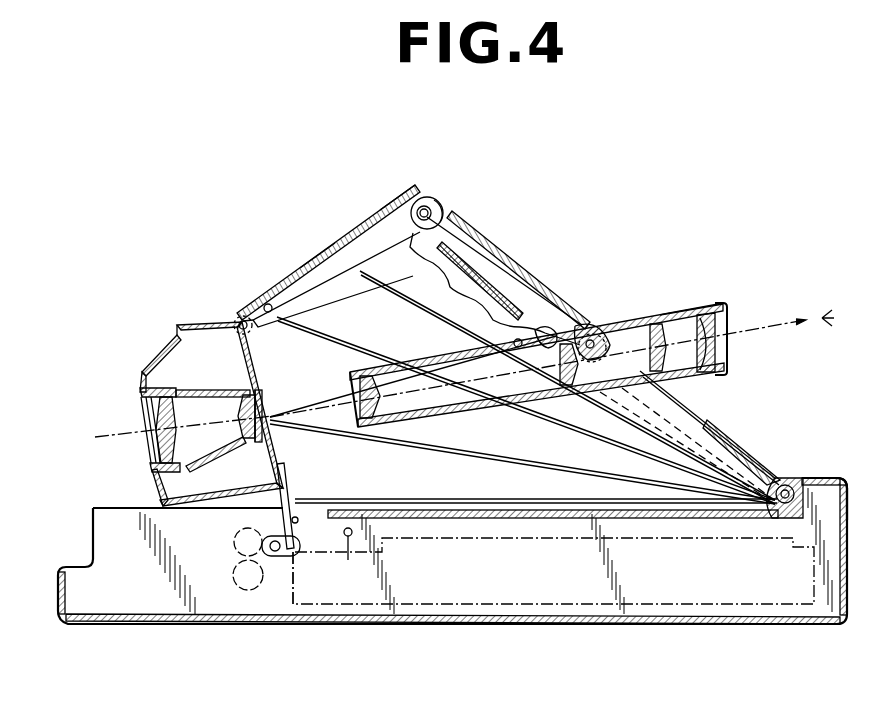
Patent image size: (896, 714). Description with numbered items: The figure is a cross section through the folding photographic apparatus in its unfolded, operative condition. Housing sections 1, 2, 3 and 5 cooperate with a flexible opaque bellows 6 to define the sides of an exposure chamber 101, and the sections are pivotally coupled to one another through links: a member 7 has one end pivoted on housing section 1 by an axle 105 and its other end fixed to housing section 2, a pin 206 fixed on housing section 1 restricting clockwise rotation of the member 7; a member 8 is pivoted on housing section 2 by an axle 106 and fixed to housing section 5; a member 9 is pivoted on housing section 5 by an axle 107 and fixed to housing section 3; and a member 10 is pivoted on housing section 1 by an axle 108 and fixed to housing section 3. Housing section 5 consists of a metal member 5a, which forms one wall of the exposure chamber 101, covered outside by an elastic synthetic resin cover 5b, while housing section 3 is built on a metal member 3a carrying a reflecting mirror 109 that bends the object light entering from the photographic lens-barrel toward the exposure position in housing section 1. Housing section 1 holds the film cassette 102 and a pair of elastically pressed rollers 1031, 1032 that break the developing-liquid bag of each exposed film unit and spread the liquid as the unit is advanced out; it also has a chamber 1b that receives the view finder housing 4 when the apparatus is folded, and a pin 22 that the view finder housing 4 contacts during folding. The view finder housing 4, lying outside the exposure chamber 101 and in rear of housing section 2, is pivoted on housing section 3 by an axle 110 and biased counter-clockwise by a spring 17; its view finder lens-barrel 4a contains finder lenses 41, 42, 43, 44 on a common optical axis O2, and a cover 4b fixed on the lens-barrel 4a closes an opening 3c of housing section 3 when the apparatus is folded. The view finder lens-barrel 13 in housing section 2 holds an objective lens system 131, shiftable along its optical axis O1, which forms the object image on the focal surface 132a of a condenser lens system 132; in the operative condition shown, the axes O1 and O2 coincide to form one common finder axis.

The housing section 1 is at (781, 616).
The chamber 1b is at (712, 538).
The housing section 2 is at (162, 352).
The housing section 3 is at (526, 272).
The metal member 3a is at (556, 296).
The opening 3c is at (698, 414).
The view finder housing 4 is at (486, 388).
The view finder lens-barrel 4a is at (690, 298).
The cover 4b is at (727, 306).
The finder lens 41 is at (368, 426).
The finder lens 42 is at (568, 386).
The finder lens 43 is at (654, 324).
The finder lens 44 is at (720, 348).
The housing section 5 is at (362, 240).
The metal member 5a is at (402, 216).
The elastic cover 5b is at (328, 248).
The flexible opaque bellows 6 is at (345, 300).
The member 7 is at (272, 501).
The member 8 is at (265, 304).
The member 9 is at (441, 202).
The member 10 is at (818, 500).
The view finder lens-barrel 13 is at (145, 385).
The objective lens system 131 is at (162, 448).
The condenser lens system 132 is at (262, 412).
The focal surface 132a is at (252, 395).
The spring 17 is at (552, 328).
The pin 22 is at (347, 559).
The exposure chamber 101 is at (540, 231).
The film cassette 102 is at (428, 592).
The roller 1031 is at (246, 590).
The roller 1032 is at (236, 550).
The axle 105 is at (276, 552).
The axle 106 is at (240, 319).
The axle 107 is at (424, 197).
The axle 108 is at (791, 482).
The reflecting mirror 109 is at (474, 254).
The axle 110 is at (598, 333).
The pin 206 is at (298, 562).
The optical axis O1 is at (180, 430).
The optical axis O2 is at (552, 357).